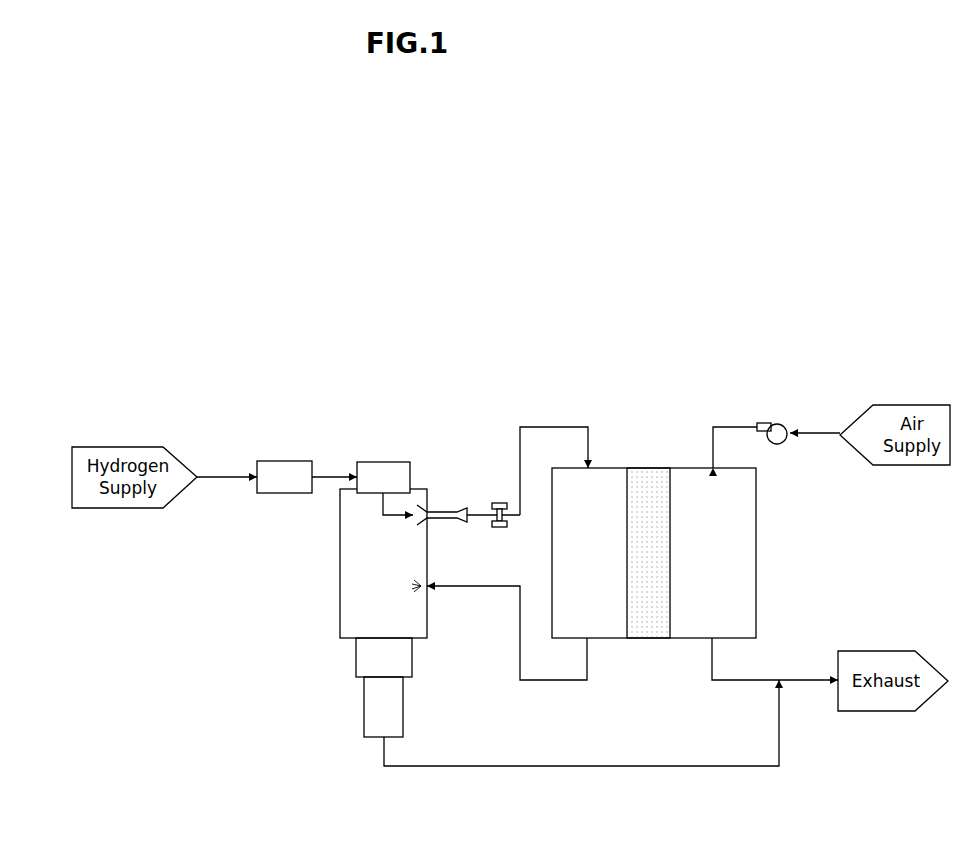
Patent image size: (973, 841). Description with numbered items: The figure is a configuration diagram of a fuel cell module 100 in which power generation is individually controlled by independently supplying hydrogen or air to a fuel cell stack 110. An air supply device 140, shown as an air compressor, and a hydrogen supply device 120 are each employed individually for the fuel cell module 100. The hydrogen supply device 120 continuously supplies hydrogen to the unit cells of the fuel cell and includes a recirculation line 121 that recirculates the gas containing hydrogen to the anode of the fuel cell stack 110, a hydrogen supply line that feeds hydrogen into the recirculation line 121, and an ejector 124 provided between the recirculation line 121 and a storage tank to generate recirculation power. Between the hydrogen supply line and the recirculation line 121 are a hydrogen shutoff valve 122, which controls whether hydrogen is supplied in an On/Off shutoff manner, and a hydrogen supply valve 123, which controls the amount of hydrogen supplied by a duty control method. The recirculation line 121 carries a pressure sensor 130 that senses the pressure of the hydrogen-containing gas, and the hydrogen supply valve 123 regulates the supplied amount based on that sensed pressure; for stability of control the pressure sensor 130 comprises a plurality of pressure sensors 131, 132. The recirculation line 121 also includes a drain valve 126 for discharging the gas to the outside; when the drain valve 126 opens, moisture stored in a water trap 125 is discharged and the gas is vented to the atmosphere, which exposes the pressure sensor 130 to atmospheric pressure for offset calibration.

The fuel cell module 100 is at (700, 388).
The fuel cell stack 110 is at (648, 468).
The hydrogen supply device 120 is at (413, 425).
The recirculation line 121 is at (560, 427).
The hydrogen shutoff valve 122 is at (279, 461).
The hydrogen supply valve 123 is at (377, 462).
The ejector 124 is at (443, 512).
The water trap 125 is at (356, 658).
The drain valve 126 is at (364, 713).
The pressure sensor 130 is at (607, 746).
The pressure sensor 131 is at (497, 503).
The pressure sensor 132 is at (497, 528).
The air supply device 140 is at (840, 540).